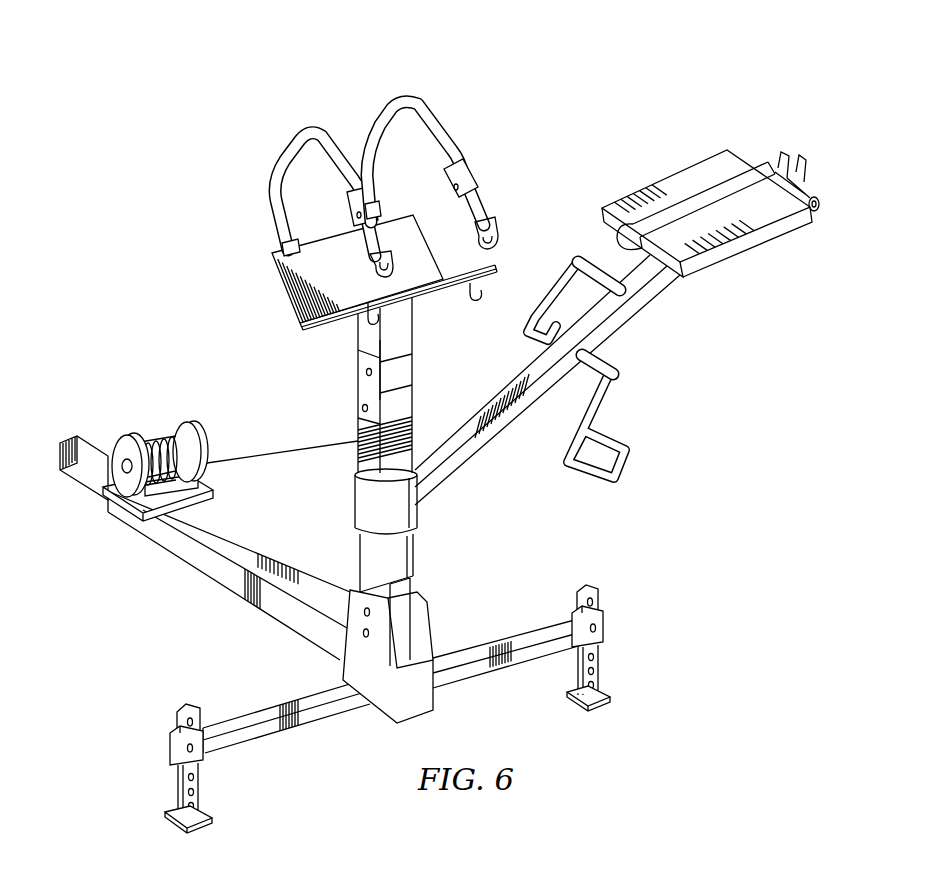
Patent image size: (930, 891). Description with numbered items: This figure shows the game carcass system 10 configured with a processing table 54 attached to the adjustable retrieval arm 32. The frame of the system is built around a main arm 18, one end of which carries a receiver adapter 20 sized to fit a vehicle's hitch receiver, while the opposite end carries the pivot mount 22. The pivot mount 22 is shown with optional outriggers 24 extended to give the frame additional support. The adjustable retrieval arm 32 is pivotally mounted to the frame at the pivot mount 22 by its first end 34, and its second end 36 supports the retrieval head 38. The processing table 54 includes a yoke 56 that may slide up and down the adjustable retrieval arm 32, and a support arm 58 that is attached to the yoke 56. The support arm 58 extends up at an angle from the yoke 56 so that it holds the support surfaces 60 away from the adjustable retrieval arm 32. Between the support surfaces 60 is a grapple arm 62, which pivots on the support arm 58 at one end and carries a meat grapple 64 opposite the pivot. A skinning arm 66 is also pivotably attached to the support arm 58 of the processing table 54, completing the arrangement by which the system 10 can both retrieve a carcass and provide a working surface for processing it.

The game carcass system 10 is at (514, 56).
The main arm 18 is at (179, 543).
The receiver adapter 20 is at (85, 476).
The pivot mount 22 is at (416, 709).
The outriggers 24 is at (235, 722).
The adjustable retrieval arm 32 is at (365, 429).
The first end 34 is at (412, 621).
The second end 36 is at (400, 373).
The retrieval head 38 is at (258, 292).
The processing table 54 is at (645, 328).
The yoke 56 is at (366, 512).
The support arm 58 is at (517, 378).
The support surfaces 60 is at (721, 168).
The grapple arm 62 is at (700, 205).
The meat grapple 64 is at (795, 168).
The skinning arm 66 is at (605, 402).